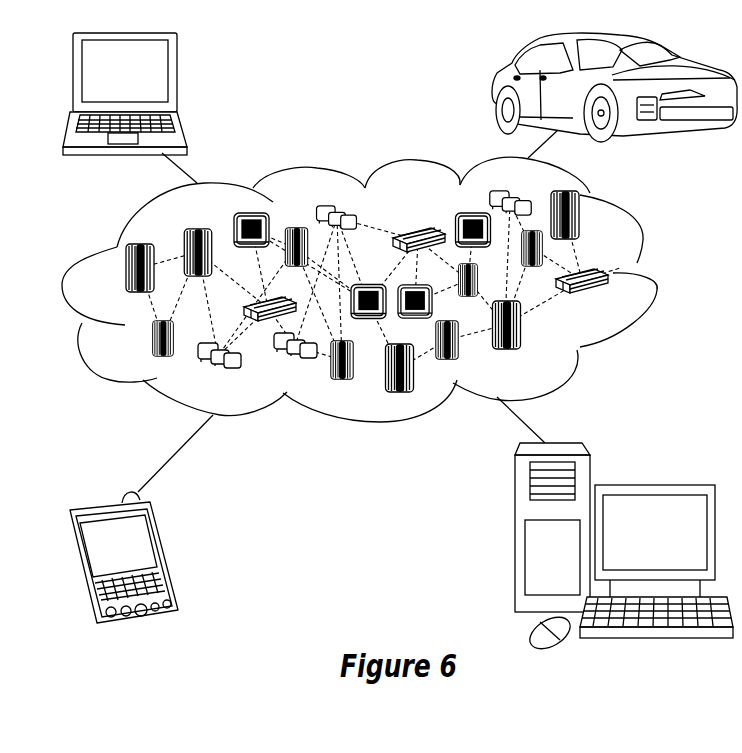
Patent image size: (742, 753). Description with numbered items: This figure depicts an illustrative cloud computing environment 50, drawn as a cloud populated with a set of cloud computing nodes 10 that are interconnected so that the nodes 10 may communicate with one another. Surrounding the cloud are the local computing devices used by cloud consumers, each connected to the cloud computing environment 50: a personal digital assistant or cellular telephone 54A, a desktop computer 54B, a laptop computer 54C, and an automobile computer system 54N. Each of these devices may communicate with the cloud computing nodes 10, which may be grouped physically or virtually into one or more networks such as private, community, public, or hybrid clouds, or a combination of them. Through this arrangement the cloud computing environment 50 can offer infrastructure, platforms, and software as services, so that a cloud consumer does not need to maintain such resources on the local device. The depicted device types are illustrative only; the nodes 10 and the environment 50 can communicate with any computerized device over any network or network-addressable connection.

The cloud computing nodes 10 is at (622, 301).
The cloud computing environment 50 is at (653, 276).
The personal digital assistant (PDA) or cellular telephone 54A is at (170, 552).
The desktop computer 54B is at (652, 485).
The laptop computer 54C is at (180, 72).
The automobile computer system 54N is at (494, 86).